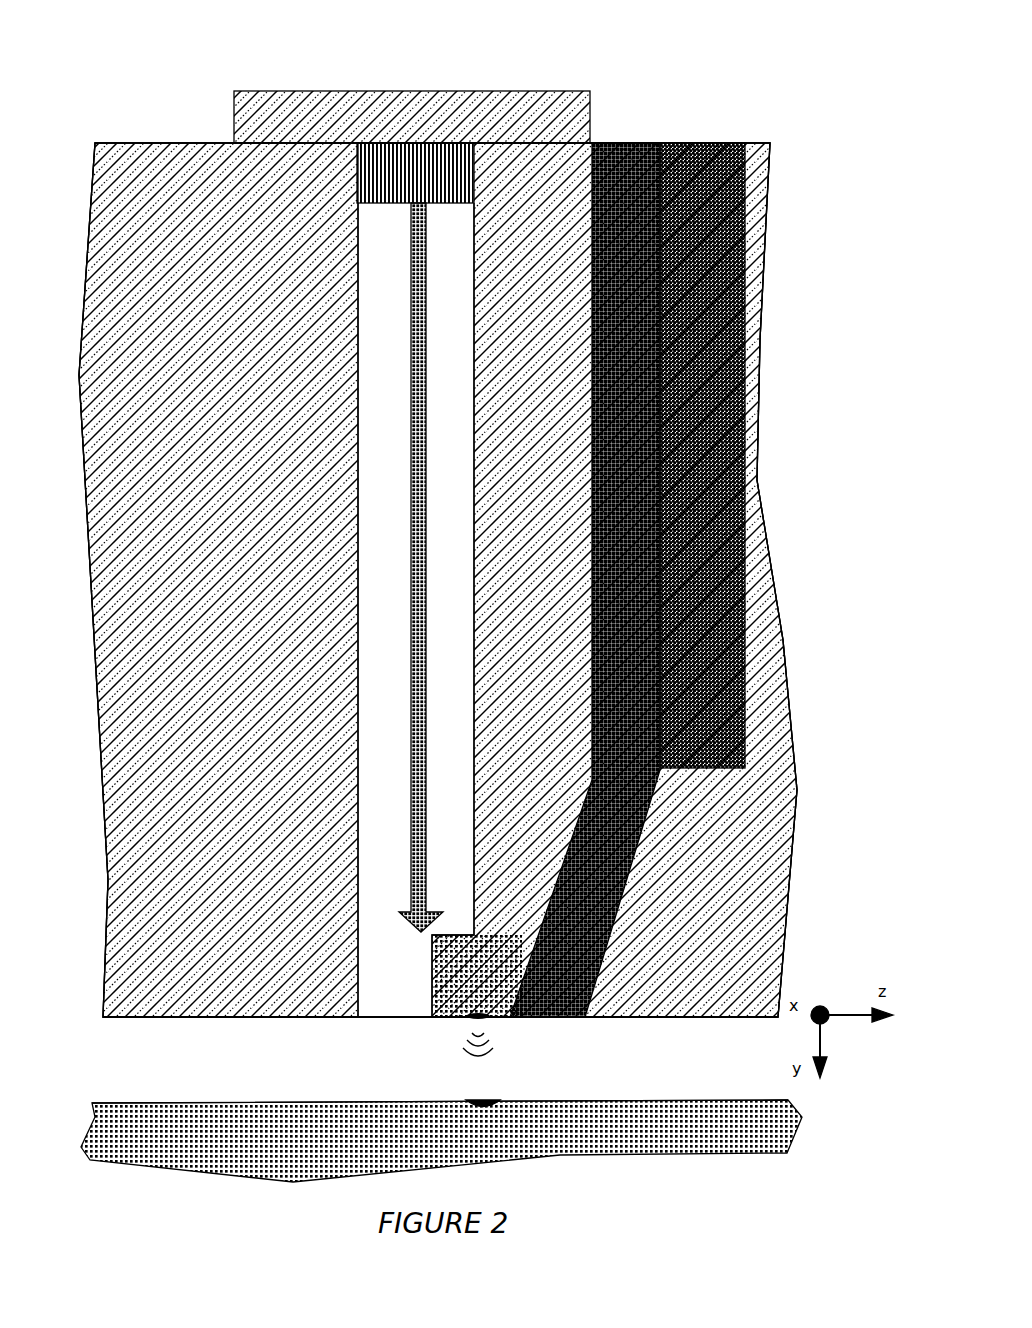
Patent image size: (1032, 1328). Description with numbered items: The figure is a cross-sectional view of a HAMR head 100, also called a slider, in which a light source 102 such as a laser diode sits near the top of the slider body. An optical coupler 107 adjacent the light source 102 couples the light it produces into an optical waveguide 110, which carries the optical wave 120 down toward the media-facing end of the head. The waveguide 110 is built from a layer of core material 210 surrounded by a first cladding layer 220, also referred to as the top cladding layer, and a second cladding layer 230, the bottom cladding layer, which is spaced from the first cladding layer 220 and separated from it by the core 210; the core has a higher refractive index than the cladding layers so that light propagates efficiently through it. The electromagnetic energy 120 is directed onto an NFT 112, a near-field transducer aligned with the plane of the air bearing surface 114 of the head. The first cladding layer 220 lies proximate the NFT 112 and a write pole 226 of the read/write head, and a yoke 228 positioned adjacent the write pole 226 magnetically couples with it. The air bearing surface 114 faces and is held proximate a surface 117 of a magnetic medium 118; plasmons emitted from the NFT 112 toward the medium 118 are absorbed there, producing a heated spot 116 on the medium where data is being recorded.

The HAMR head 100 is at (752, 105).
The light source 102 is at (258, 91).
The optical coupler 107 is at (415, 173).
The optical waveguide 110 is at (88, 212).
The NFT 112 is at (462, 1003).
The air bearing surface 114 is at (157, 1018).
The contact spot on workpiece 116 is at (480, 1102).
The surface of the magnetic medium 117 is at (724, 1100).
The magnetic medium 118 is at (740, 1138).
The optical wave 120 is at (411, 706).
The core layer 210 is at (467, 718).
The first cladding layer 220 is at (614, 580).
The write pole 226 is at (585, 580).
The yoke 228 is at (745, 412).
The second cladding layer 230 is at (218, 580).